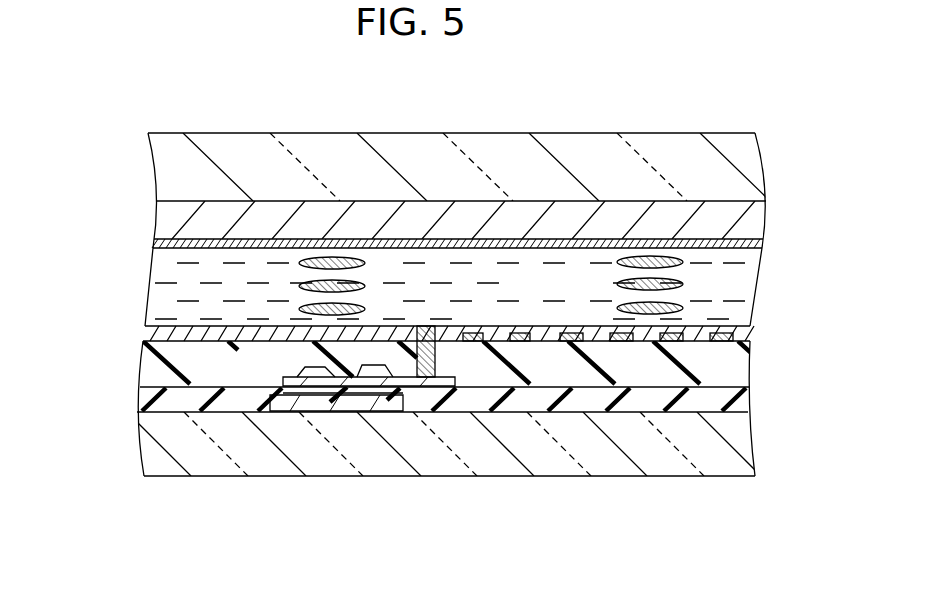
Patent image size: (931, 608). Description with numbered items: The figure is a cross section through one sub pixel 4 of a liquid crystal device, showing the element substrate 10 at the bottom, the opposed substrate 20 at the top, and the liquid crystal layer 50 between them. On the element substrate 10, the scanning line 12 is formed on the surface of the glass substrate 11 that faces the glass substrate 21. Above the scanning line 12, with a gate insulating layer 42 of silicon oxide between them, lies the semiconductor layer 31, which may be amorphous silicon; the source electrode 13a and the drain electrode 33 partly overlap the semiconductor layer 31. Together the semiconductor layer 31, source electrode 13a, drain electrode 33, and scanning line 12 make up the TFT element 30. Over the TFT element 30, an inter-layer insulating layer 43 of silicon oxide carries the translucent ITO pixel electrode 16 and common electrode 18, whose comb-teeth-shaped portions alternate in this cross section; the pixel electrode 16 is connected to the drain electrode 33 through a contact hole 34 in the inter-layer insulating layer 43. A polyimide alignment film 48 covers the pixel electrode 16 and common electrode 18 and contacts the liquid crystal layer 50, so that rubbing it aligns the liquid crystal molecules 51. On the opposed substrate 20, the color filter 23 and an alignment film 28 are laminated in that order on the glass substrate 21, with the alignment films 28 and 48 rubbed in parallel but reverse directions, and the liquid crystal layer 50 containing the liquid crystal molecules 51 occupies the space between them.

The sub pixel 4 is at (652, 94).
The element substrate 10 is at (144, 483).
The glass substrate 11 is at (744, 441).
The scanning line 12 is at (297, 412).
The source electrode 13a is at (279, 378).
The pixel electrode 16 is at (567, 326).
The common electrode 18 is at (717, 342).
The opposed substrate 20 is at (152, 248).
The glass substrate 21 is at (765, 175).
The color filter 23 is at (765, 219).
The alignment film 28 is at (764, 244).
The TFT element 30 is at (357, 432).
The semiconductor layer 31 is at (355, 412).
The drain electrode 33 is at (432, 387).
The contact hole 34 is at (440, 372).
The gate insulating layer 42 is at (744, 398).
The inter-layer insulating layer 43 is at (481, 397).
The alignment film 48 is at (752, 334).
The liquid crystal layer 50 is at (482, 287).
The liquid crystal molecules 51 is at (299, 287).